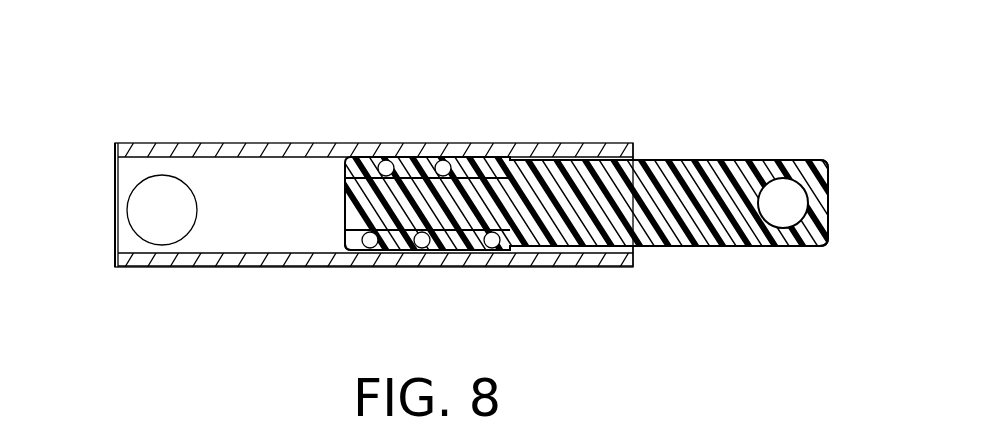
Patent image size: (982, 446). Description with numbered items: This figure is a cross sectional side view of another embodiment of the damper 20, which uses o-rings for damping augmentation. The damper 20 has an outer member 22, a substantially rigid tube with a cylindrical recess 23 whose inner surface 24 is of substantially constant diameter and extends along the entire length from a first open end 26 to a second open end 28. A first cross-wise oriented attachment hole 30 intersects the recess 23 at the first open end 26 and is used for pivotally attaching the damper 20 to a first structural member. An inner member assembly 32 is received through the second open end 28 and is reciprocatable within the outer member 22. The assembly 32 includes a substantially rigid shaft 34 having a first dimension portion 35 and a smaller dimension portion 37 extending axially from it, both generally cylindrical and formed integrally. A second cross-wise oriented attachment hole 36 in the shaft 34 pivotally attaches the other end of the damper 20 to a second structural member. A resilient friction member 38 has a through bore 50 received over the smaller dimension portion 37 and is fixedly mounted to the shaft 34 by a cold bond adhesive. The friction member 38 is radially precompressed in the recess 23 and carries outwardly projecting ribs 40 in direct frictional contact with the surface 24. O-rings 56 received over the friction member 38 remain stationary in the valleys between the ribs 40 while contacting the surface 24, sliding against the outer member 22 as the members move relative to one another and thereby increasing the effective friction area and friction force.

The damper 20 is at (483, 192).
The outer member 22 is at (183, 141).
The cylindrical recess 23 is at (279, 226).
The inner surface 24 is at (312, 252).
The first open end 26 is at (113, 268).
The second open end 28 is at (637, 140).
The first cross-wise oriented attachment hole 30 is at (178, 238).
The inner member assembly 32 is at (561, 189).
The shaft 34 is at (740, 156).
The first dimension portion 35 is at (654, 217).
The second cross-wise oriented attachment hole 36 is at (774, 229).
The smaller dimension portion 37 is at (414, 213).
The resilient friction member 38 is at (349, 256).
The protrusion 40 is at (370, 248).
The through bore 50 is at (398, 172).
The o-rings 56 is at (386, 160).